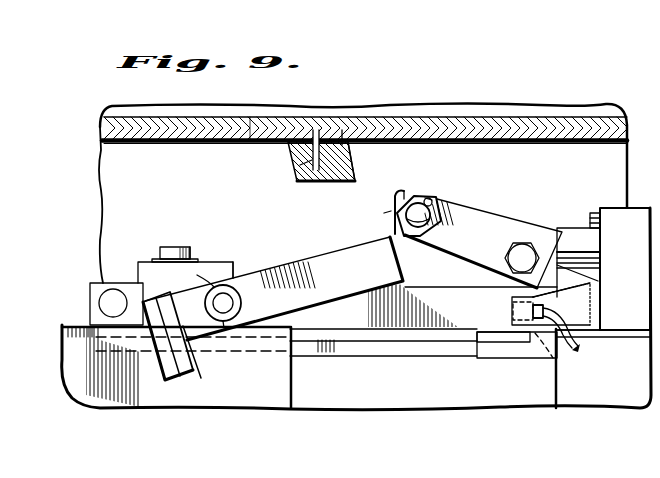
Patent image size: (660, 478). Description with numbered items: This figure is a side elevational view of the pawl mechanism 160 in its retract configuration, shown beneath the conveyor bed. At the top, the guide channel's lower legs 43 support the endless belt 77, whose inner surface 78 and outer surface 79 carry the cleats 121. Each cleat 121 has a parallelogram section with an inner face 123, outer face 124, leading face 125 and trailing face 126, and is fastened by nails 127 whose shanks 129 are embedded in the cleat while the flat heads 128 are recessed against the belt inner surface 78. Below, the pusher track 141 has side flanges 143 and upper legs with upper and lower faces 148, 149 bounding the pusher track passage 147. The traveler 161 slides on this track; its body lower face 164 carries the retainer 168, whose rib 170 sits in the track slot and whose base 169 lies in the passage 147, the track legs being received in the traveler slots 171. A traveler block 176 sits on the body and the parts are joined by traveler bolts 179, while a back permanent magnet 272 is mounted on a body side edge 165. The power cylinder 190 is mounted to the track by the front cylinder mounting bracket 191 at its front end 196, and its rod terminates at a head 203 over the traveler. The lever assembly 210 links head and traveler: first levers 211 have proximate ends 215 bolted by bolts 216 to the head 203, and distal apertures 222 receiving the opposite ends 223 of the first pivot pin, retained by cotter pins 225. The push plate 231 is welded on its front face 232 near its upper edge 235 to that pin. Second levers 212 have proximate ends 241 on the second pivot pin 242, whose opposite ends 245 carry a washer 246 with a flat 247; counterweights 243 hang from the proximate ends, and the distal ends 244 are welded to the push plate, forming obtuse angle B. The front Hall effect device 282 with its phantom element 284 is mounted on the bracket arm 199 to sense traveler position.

The lower legs 43 is at (104, 114).
The endless belt 77 is at (102, 139).
The belt inner surface 78 is at (146, 118).
The belt outer surface 79 is at (142, 141).
The nails 127 is at (262, 117).
The nail heads 128 is at (320, 130).
The cleat inner face 123 is at (342, 142).
The cleat leading face 125 is at (289, 152).
The cleat trailing face 126 is at (352, 147).
The nail shanks 129 is at (312, 160).
The cleats 121 is at (297, 183).
The cleat outer face 124 is at (328, 183).
The push plate 231 is at (393, 205).
The push plate upper edge 235 is at (398, 193).
The lever assembly 210 is at (416, 188).
The aperture 222 is at (431, 223).
The first pivot pin opposite ends 223 is at (433, 202).
The cotter pins 225 is at (432, 200).
The obtuse included angle B is at (370, 238).
The second levers 212 is at (304, 267).
The push plate front face 232 is at (346, 262).
The traveler body side edges 165 is at (356, 300).
The second lever distal ends 244 is at (404, 266).
The second pivot pin 242 is at (241, 303).
The second lever proximate ends 241 is at (212, 284).
The second pivot pin opposite ends 245 is at (224, 323).
The first levers 211 is at (510, 220).
The bolt 216 is at (507, 257).
The cylinder rod head 203 is at (558, 228).
The cylinder front end 196 is at (601, 240).
The power cylinder 190 is at (603, 208).
The front cylinder mounting bracket 191 is at (603, 278).
The first lever proximate end 215 is at (600, 282).
The front Hall effect device 282 is at (538, 300).
The arm 199 is at (598, 331).
The element 284 is at (556, 363).
The upper leg upper face 148 is at (474, 329).
The rib 170 is at (310, 332).
The traveler slots 171 is at (408, 333).
The retainer base 169 is at (322, 357).
The retainer 168 is at (483, 358).
The upper leg lower face 149 is at (521, 336).
The pusher track side flanges 143 is at (290, 398).
The pusher track passage 147 is at (376, 404).
The pusher track 141 is at (66, 326).
The traveler body lower face 164 is at (98, 334).
The traveler 161 is at (90, 297).
The pawl mechanism 160 is at (89, 281).
The back permanent magnet 272 is at (107, 264).
The traveler block 176 is at (154, 262).
The traveler bolts 179 is at (192, 251).
The washer 246 is at (234, 270).
The counterweights 243 is at (169, 383).
The washer flat 247 is at (203, 378).